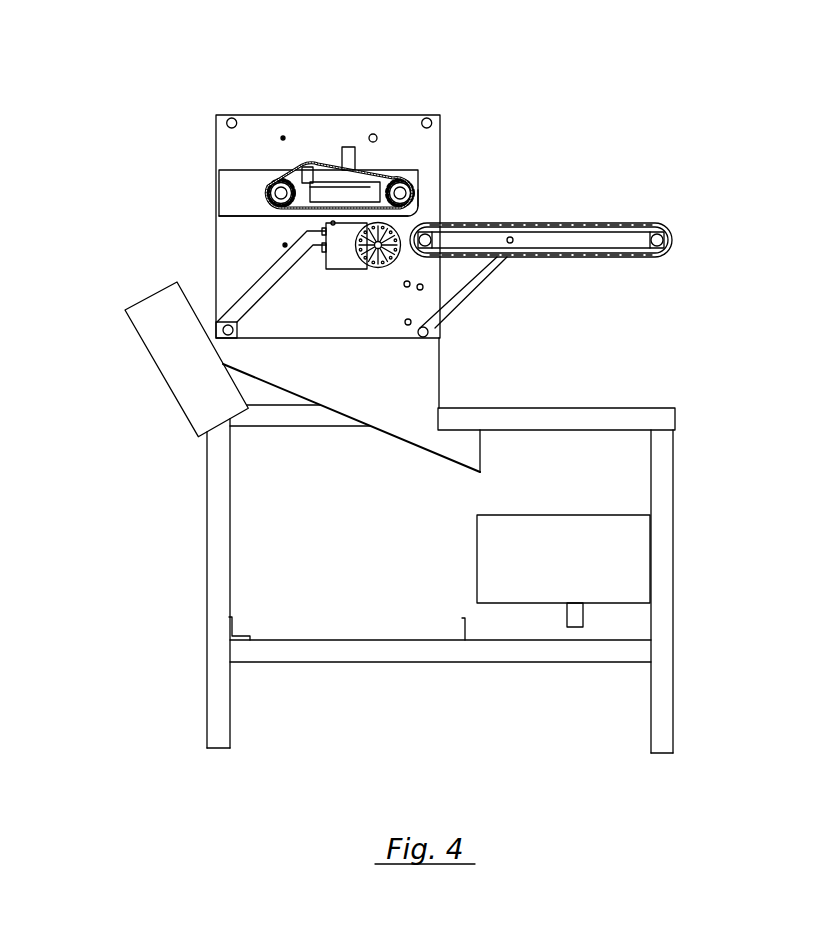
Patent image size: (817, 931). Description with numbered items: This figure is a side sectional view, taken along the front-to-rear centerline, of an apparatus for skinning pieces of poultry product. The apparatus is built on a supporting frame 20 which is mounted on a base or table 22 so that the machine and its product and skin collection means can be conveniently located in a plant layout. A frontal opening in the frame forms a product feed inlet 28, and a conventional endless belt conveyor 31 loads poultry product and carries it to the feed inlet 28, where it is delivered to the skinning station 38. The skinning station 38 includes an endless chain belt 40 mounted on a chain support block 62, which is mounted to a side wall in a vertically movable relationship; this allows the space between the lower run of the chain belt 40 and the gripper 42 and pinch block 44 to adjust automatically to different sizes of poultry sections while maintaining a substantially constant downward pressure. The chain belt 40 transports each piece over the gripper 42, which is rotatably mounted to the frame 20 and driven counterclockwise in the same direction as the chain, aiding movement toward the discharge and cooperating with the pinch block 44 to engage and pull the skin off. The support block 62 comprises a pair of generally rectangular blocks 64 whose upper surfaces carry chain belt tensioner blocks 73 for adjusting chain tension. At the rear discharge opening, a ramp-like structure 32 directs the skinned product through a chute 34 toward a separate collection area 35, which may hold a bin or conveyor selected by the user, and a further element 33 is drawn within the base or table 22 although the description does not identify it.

The supporting frame 20 is at (462, 145).
The base or table 22 is at (687, 467).
The product feed inlet 28 is at (427, 205).
The endless belt conveyor 31 is at (593, 257).
The ramp-like structure 32 is at (247, 283).
The control box 33 is at (613, 515).
The chute 34 is at (143, 345).
The collection area 35 is at (338, 632).
The skinning station 38 is at (402, 140).
The endless chain belt 40 is at (287, 172).
The gripper 42 is at (373, 268).
The pinch block 44 is at (333, 270).
The chain support block 62 is at (200, 182).
The rectangular blocks 64 is at (233, 215).
The chain belt tensioner blocks 73 is at (303, 170).